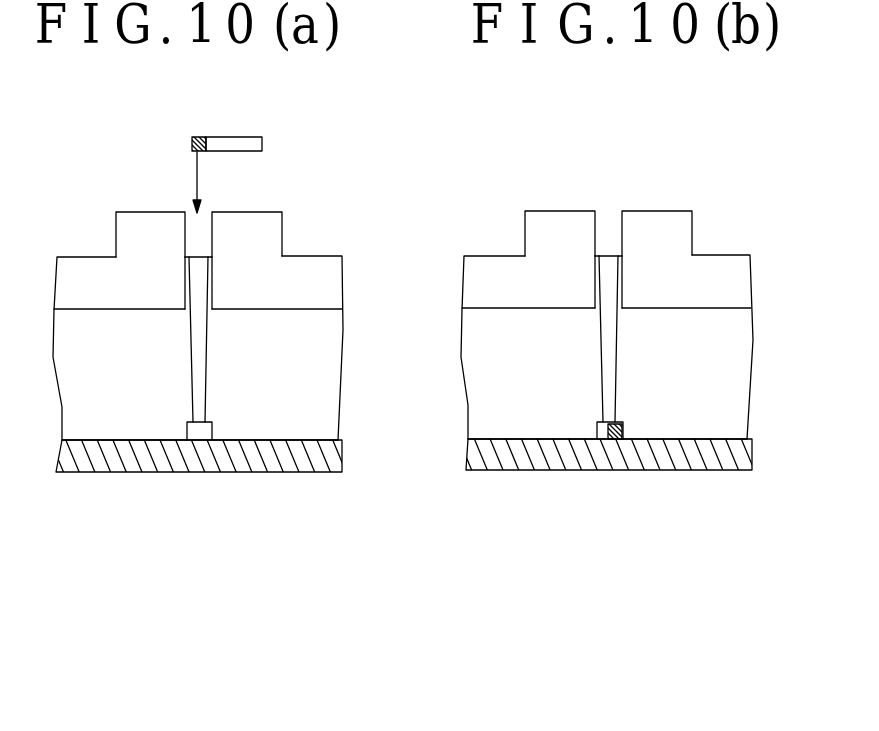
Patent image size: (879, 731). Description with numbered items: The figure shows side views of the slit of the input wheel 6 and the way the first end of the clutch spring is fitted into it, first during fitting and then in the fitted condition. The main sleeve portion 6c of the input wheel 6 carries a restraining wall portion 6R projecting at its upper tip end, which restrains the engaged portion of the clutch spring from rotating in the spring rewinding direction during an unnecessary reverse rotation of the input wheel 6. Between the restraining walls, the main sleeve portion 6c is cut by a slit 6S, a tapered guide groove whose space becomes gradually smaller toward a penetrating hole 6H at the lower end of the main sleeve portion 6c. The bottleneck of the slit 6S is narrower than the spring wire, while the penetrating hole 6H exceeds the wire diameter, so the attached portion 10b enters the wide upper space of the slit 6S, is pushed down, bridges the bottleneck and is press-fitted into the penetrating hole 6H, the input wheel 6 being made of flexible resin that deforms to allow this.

In FIG. 10A, the input wheel 6 is at (186, 482).
In FIG. 10B, the input wheel 6 is at (598, 480).
In FIG. 10A, the main sleeve portion 6c is at (318, 333).
In FIG. 10B, the main sleeve portion 6c is at (477, 397).
In FIG. 10A, the restraining wall portion 6R is at (128, 232).
In FIG. 10B, the restraining wall portion 6R is at (538, 230).
In FIG. 10A, the slit 6S is at (198, 230).
In FIG. 10B, the slit 6S is at (608, 230).
In FIG. 10A, the penetrating hole 6H is at (202, 428).
In FIG. 10B, the penetrating hole 6H is at (598, 428).
In FIG. 10A, the attached portion 10b is at (192, 144).
In FIG. 10B, the attached portion 10b is at (623, 424).